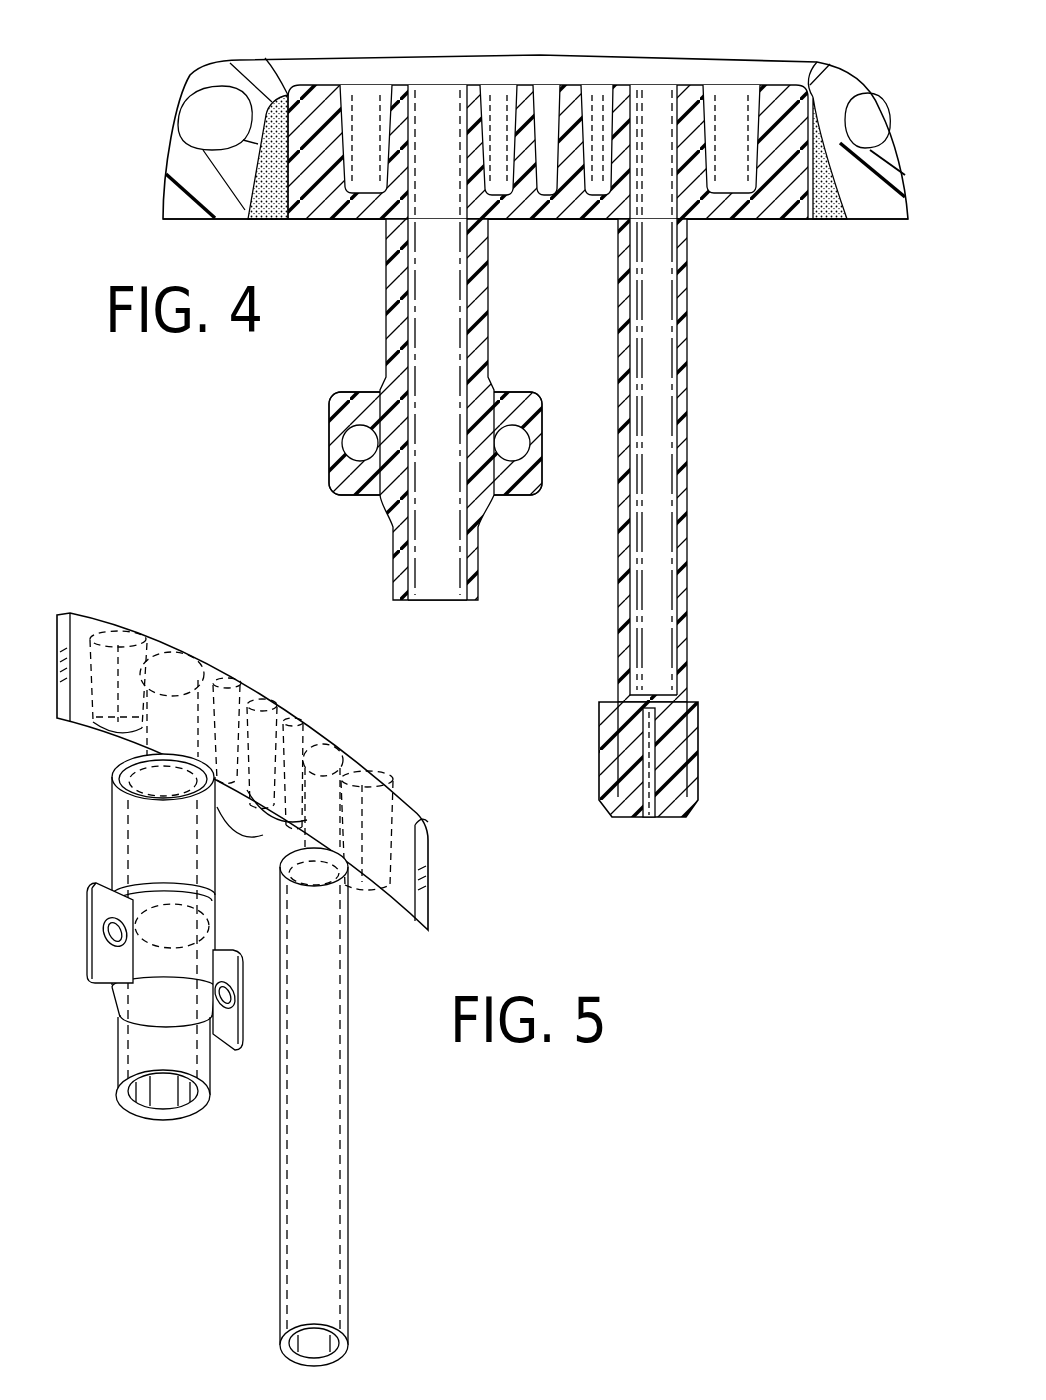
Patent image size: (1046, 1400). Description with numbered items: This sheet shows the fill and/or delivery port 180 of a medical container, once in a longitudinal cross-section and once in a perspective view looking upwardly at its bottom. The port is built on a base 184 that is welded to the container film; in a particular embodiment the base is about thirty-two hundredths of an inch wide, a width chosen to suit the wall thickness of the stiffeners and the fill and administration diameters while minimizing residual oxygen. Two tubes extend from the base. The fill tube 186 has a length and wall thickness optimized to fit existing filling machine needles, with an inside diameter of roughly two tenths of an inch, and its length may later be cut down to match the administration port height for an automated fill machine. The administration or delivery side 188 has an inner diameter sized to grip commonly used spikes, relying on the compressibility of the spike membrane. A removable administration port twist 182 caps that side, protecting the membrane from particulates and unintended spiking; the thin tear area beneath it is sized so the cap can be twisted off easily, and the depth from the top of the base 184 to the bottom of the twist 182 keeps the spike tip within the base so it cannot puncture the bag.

In FIG. 4, the fill and/or delivery port 180 is at (850, 58).
In FIG. 4, the administration port twist 182 is at (345, 472).
In FIG. 5, the administration port twist 182 is at (86, 953).
In FIG. 4, the base 184 is at (890, 222).
In FIG. 5, the base 184 is at (92, 740).
In FIG. 4, the fill tube 186 is at (687, 468).
In FIG. 5, the fill tube 186 is at (348, 1166).
In FIG. 4, the administration or delivery side 188 is at (385, 322).
In FIG. 5, the administration or delivery side 188 is at (112, 830).